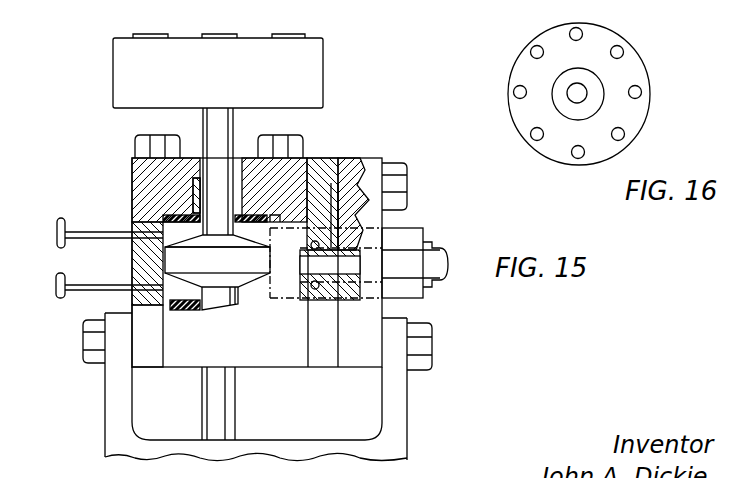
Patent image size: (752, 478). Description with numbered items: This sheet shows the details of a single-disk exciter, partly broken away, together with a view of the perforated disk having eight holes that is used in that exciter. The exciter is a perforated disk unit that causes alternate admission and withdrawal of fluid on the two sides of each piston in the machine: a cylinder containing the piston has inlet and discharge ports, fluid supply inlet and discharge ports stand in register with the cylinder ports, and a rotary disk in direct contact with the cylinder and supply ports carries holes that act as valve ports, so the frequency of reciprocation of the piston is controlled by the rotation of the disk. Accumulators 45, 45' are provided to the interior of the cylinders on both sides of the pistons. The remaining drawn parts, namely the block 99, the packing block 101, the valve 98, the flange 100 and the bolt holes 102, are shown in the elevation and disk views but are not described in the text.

In FIG. 15, the top block 99 is at (308, 70).
In FIG. 15, the packing block 101 is at (163, 214).
In FIG. 15, the valve 98 is at (180, 259).
In FIG. 15, the accumulator 45 is at (84, 233).
In FIG. 15, the accumulator 45' is at (86, 285).
In FIG. 15, the flange 100 is at (361, 248).
In FIG. 16, the flange 100 is at (550, 162).
In FIG. 15, the bolt holes 102 is at (362, 183).
In FIG. 16, the bolt holes 102 is at (531, 130).